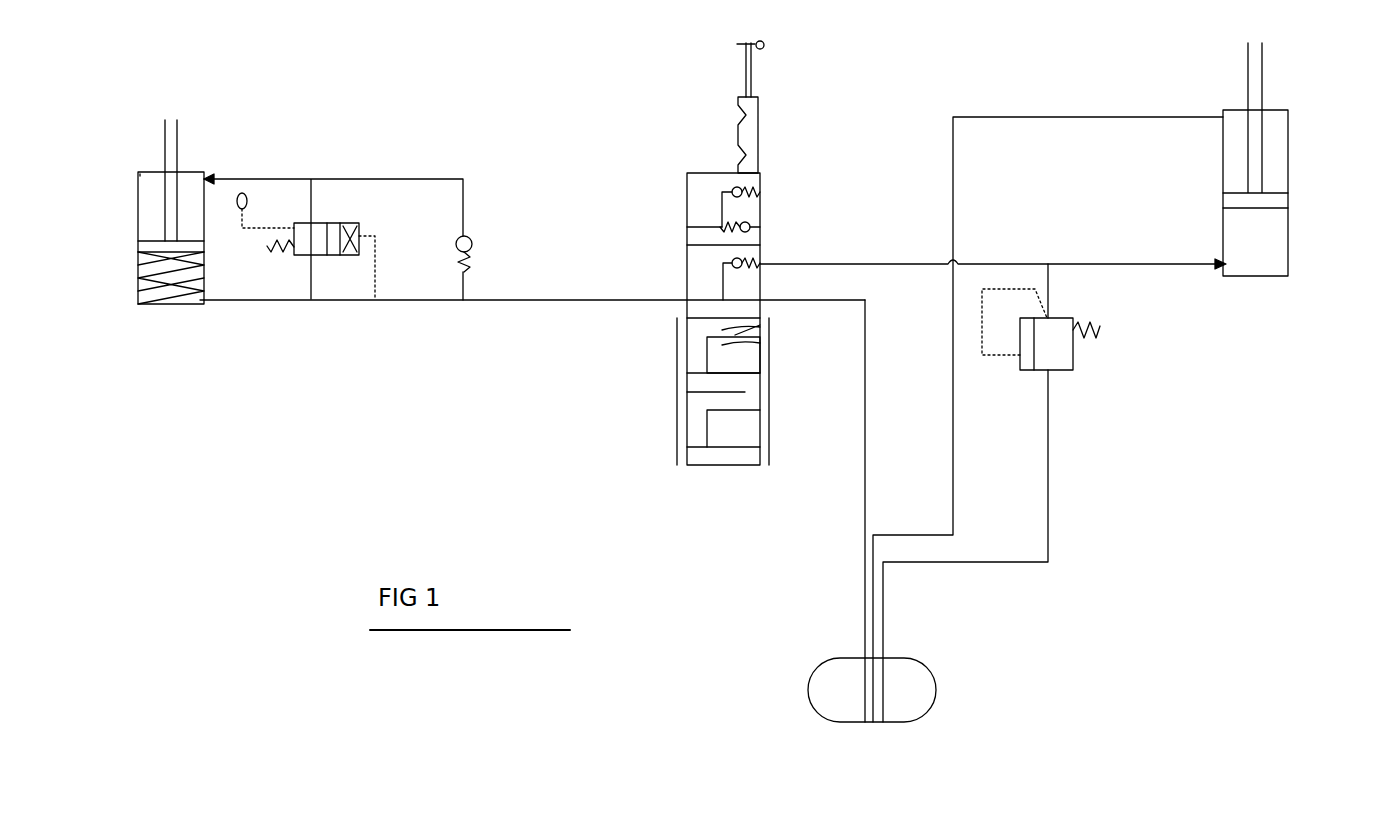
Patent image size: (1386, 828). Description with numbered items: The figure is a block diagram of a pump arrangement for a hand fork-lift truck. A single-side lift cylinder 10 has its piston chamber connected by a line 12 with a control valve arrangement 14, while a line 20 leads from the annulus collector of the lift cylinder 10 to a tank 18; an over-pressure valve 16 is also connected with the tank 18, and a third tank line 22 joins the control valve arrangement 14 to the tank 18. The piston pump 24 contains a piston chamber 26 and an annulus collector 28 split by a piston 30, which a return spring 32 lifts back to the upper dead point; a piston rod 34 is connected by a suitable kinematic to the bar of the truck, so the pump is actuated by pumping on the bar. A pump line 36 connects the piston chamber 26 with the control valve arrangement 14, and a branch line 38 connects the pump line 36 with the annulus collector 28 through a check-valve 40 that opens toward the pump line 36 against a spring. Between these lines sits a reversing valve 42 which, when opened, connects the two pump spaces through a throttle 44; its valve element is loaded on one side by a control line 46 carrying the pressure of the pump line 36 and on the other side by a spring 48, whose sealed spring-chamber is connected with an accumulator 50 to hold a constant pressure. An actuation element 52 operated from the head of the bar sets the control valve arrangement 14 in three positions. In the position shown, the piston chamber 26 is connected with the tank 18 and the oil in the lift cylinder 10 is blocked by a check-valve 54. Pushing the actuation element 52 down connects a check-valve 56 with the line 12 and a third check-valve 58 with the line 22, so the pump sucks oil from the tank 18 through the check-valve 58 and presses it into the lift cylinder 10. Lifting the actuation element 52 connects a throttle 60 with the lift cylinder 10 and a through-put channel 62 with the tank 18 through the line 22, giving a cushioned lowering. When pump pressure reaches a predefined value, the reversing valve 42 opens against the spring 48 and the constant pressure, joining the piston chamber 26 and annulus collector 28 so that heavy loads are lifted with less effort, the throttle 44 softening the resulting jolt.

The lift cylinder 10 is at (1296, 240).
The line 12 is at (864, 262).
The control valve arrangement 14 is at (741, 253).
The over-pressure valve 16 is at (1073, 358).
The tank 18 is at (940, 688).
The line 20 is at (958, 196).
The third tank line 22 is at (870, 412).
The piston pump 24 is at (162, 238).
The piston chamber 26 is at (135, 270).
The annulus collector 28 is at (152, 180).
The piston 30 is at (145, 240).
The return spring 32 is at (200, 302).
The piston rod 34 is at (178, 142).
The pump line 36 is at (542, 304).
The branch line 38 is at (412, 178).
The check-valve 40 is at (476, 244).
The reversing valve 42 is at (325, 238).
The throttle 44 is at (345, 256).
The control line 46 is at (376, 262).
The spring 48 is at (270, 249).
The accumulator 50 is at (248, 205).
The actuation element 52 is at (748, 137).
The check-valve 54 is at (755, 270).
The check-valve 56 is at (752, 200).
The third check-valve 58 is at (752, 233).
The throttle 60 is at (765, 328).
The through-put channel 62 is at (762, 372).